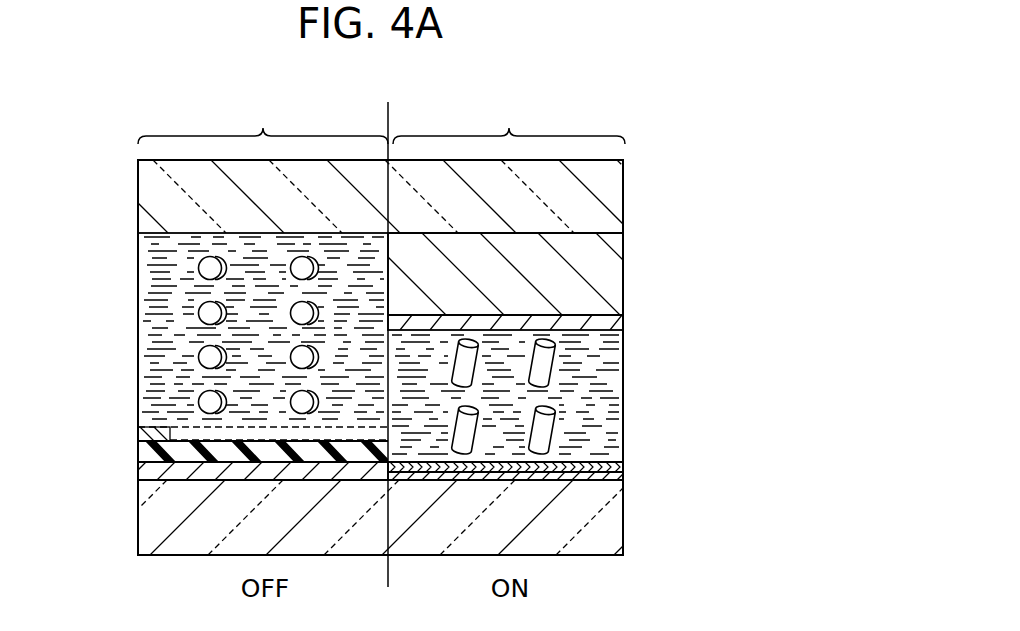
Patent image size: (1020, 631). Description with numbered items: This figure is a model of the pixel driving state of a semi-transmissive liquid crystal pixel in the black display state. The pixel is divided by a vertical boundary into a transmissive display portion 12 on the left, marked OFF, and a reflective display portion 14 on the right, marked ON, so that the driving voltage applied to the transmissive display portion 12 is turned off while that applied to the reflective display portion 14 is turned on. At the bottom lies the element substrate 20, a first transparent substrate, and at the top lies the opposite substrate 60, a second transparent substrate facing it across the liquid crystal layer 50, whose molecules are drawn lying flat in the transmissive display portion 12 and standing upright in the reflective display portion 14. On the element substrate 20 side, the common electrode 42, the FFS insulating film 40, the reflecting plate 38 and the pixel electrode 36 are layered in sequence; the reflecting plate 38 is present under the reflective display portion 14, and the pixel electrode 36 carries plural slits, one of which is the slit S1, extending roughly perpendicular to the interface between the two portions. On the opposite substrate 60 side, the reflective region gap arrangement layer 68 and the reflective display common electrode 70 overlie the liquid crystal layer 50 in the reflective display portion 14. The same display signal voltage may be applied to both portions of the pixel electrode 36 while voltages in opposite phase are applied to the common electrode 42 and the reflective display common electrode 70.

The transmissive display portion 12 is at (263, 123).
The reflective display portion 14 is at (509, 123).
The element substrate 20 is at (645, 518).
The pixel electrode 36 is at (138, 433).
The reflecting plate 38 is at (623, 475).
The FFS insulating film 40 is at (138, 455).
The common electrode 42 is at (145, 470).
The liquid crystal layer 50 is at (618, 385).
The opposite substrate 60 is at (643, 197).
The reflective region gap arrangement layer 68 is at (615, 270).
The reflective display common electrode 70 is at (615, 323).
The slit S1 is at (176, 417).